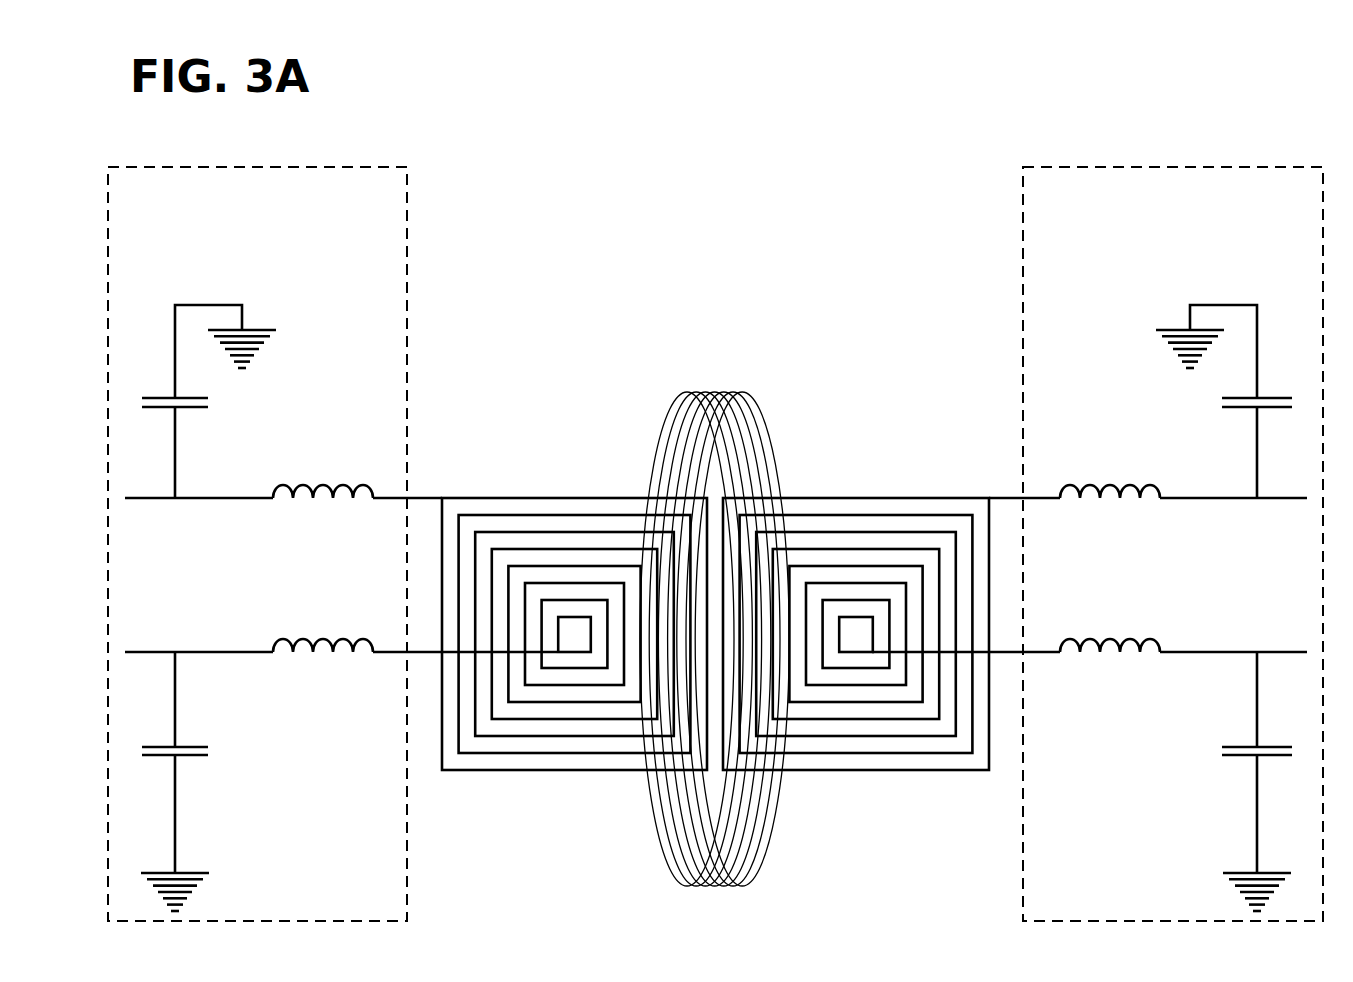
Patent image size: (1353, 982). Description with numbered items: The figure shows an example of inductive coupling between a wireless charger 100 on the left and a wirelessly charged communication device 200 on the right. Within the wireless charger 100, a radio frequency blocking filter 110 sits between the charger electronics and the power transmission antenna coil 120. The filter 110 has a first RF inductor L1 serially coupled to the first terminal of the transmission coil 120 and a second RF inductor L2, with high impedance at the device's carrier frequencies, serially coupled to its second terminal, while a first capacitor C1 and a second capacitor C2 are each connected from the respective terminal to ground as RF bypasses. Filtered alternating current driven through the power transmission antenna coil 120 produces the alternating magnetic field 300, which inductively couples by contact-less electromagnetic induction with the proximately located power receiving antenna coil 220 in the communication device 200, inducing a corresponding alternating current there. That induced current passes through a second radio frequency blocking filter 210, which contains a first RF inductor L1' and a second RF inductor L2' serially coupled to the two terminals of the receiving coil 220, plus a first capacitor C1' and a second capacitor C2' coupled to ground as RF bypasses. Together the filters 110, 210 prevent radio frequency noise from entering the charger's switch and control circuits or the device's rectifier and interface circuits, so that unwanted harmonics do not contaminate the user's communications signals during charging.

The wireless charger 100 is at (512, 155).
The radio frequency blocking filter 110 is at (332, 544).
The power transmission antenna coil 120 is at (540, 483).
The wirelessly charged communication device 200 is at (943, 192).
The radio frequency blocking filter 210 is at (1097, 544).
The power receiving antenna coil 220 is at (916, 478).
The alternating magnetic field 300 is at (737, 380).
The first capacitor C1 is at (205, 401).
The second capacitor C2 is at (172, 781).
The first RF inductor L1 is at (323, 475).
The second RF inductor L2 is at (323, 665).
The first capacitor C1' is at (1232, 401).
The second capacitor C2' is at (1265, 781).
The first RF inductor L1' is at (1110, 475).
The second RF inductor L2' is at (1110, 665).